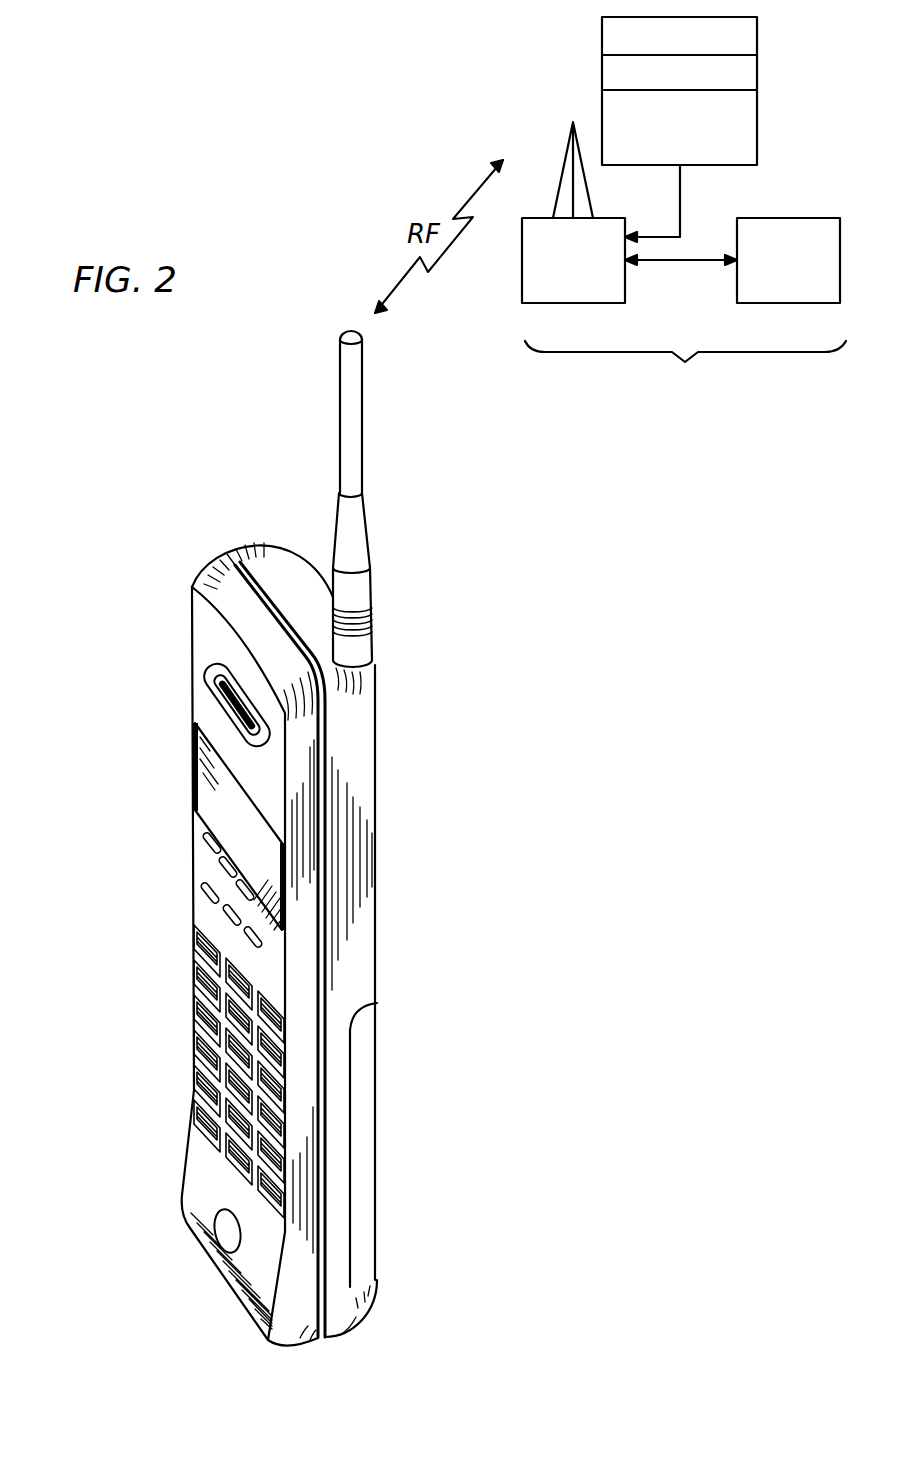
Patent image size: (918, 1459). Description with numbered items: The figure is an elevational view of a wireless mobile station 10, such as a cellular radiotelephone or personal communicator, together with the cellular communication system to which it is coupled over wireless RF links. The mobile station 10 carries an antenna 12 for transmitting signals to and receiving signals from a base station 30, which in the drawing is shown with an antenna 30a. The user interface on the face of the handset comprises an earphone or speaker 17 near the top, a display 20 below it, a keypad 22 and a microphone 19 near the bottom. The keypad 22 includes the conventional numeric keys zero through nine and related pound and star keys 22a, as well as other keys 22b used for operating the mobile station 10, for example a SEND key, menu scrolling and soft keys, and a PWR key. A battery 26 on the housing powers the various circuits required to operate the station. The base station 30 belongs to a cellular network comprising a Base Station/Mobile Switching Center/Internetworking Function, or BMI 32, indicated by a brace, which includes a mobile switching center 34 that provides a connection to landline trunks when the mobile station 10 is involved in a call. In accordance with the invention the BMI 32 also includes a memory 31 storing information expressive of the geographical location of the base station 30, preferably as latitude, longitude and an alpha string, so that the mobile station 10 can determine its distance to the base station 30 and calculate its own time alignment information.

The mobile station 10 is at (126, 578).
The antenna 12 is at (352, 442).
The speaker 17 is at (221, 683).
The microphone 19 is at (225, 1235).
The display 20 is at (216, 803).
The keypad 22 is at (255, 1024).
The numeric and related keys 22a is at (203, 1035).
The other keys 22b is at (190, 899).
The battery 26 is at (362, 1185).
The base station 30 is at (563, 305).
The base station antenna 30a is at (558, 197).
The memory 31 is at (758, 98).
The BMI 32 is at (685, 380).
The mobile switching center 34 is at (783, 217).